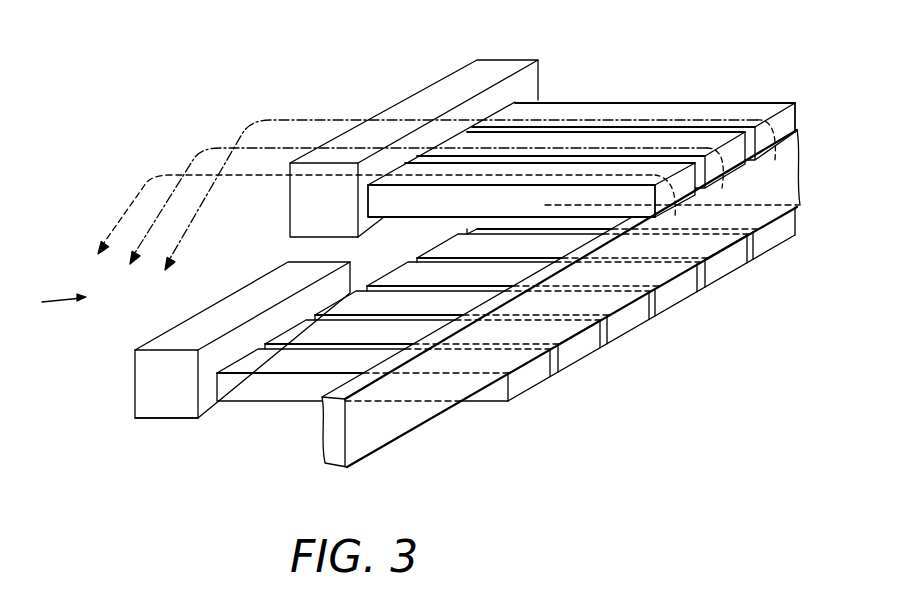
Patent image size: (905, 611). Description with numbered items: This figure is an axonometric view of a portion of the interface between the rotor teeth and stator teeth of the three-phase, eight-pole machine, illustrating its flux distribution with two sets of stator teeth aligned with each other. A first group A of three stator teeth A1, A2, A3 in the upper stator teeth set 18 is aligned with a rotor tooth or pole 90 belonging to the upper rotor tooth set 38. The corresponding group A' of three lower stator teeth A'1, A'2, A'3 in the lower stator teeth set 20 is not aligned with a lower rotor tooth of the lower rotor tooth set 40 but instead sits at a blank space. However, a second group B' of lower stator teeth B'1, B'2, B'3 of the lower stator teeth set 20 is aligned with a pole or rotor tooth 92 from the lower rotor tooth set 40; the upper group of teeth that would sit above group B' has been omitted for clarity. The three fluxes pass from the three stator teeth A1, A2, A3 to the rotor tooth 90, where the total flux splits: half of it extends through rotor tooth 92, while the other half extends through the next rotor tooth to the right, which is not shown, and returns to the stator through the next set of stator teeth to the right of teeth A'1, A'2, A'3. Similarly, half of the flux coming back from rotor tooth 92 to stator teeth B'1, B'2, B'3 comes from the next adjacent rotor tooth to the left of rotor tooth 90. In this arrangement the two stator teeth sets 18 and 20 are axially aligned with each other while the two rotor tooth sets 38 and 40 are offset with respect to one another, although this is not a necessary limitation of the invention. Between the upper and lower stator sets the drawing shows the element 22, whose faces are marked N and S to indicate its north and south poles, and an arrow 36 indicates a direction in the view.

The upper stator teeth set 18 is at (611, 142).
The lower stator teeth set 20 is at (536, 318).
The permanent magnet 22 is at (588, 298).
The direction of motion 36 is at (48, 303).
The upper rotor tooth set 38 is at (546, 56).
The lower rotor tooth set 40 is at (157, 421).
The rotor tooth or pole 90 is at (481, 68).
The rotor tooth or pole 92 is at (153, 405).
The first group of stator teeth A is at (817, 121).
The stator tooth A1 is at (690, 78).
The stator tooth A2 is at (612, 138).
The stator tooth A3 is at (535, 168).
The corresponding group of stator teeth A' is at (761, 289).
The stator tooth A'1 is at (650, 246).
The stator tooth A'2 is at (605, 275).
The stator tooth A'3 is at (550, 301).
The second group of stator teeth B' is at (631, 368).
The stator tooth B'1 is at (507, 335).
The stator tooth B'2 is at (455, 365).
The stator tooth B'3 is at (410, 390).
The magnet north pole N is at (790, 155).
The magnet south pole S is at (792, 197).